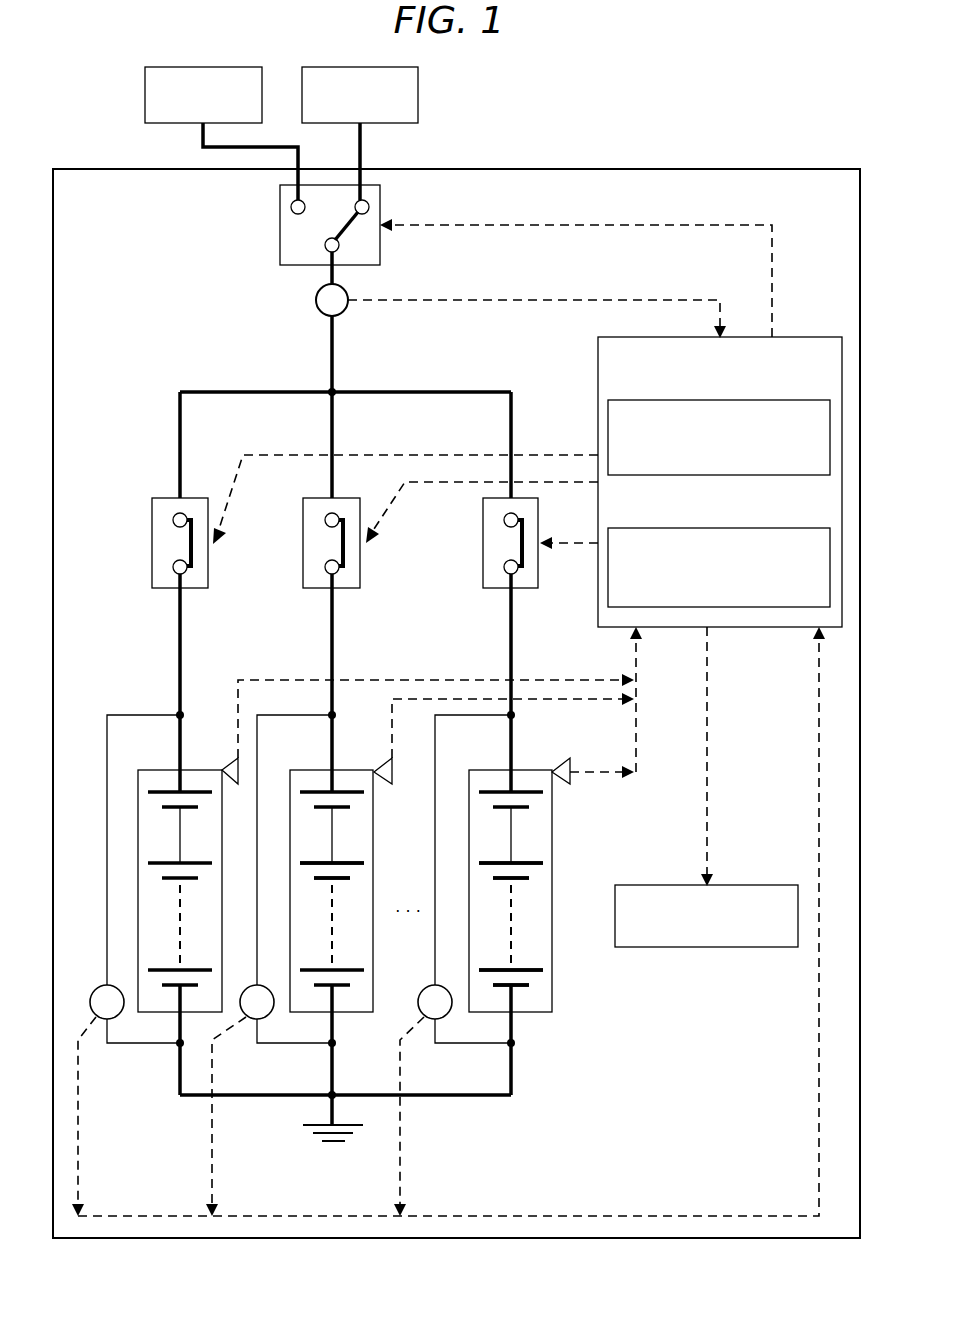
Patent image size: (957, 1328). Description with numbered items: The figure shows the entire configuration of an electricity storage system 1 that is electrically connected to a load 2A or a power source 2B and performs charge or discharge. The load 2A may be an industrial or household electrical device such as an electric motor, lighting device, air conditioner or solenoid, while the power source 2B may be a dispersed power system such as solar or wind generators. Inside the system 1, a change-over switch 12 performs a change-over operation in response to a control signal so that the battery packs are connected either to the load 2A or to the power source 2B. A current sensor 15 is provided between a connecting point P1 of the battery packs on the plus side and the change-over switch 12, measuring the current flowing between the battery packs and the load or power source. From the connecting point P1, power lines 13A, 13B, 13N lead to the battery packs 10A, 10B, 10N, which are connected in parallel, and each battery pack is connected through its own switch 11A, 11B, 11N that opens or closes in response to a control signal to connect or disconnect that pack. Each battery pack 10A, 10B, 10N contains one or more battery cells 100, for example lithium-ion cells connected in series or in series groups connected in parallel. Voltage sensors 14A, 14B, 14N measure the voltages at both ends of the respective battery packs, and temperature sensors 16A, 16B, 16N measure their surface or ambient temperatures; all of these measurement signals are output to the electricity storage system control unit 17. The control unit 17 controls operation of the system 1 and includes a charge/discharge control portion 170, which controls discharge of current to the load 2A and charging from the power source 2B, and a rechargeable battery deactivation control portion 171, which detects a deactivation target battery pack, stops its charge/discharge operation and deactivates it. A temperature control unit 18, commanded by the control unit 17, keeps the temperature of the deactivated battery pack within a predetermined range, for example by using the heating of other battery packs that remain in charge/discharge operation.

The electricity storage system 1 is at (697, 165).
The load 2A is at (418, 95).
The power source 2B is at (145, 93).
The battery pack 10A is at (160, 770).
The battery pack 10B is at (313, 770).
The battery pack 10N is at (493, 770).
The switch 11A is at (166, 540).
The switch 11B is at (320, 540).
The switch 11N is at (501, 540).
The change-over switch 12 is at (280, 229).
The power line 13A is at (180, 433).
The power line 13B is at (332, 433).
The power line 13N is at (511, 428).
The voltage sensor 14A is at (108, 1020).
The voltage sensor 14B is at (254, 1020).
The voltage sensor 14N is at (422, 986).
The current sensor 15 is at (316, 300).
The temperature sensor 16A is at (236, 768).
The temperature sensor 16B is at (390, 768).
The temperature sensor 16N is at (570, 766).
The electricity storage system control unit 17 is at (791, 337).
The temperature control unit 18 is at (731, 885).
The battery cell 100 is at (350, 862).
The charge/discharge control portion 170 is at (608, 414).
The rechargeable battery deactivation control portion 171 is at (762, 607).
The connecting point P1 is at (332, 392).